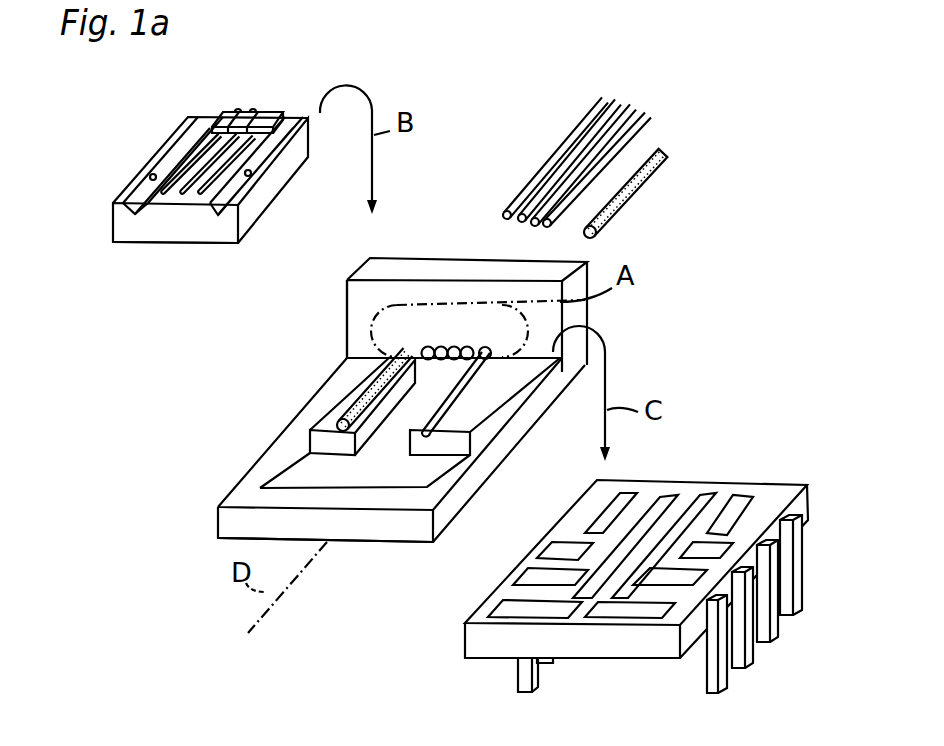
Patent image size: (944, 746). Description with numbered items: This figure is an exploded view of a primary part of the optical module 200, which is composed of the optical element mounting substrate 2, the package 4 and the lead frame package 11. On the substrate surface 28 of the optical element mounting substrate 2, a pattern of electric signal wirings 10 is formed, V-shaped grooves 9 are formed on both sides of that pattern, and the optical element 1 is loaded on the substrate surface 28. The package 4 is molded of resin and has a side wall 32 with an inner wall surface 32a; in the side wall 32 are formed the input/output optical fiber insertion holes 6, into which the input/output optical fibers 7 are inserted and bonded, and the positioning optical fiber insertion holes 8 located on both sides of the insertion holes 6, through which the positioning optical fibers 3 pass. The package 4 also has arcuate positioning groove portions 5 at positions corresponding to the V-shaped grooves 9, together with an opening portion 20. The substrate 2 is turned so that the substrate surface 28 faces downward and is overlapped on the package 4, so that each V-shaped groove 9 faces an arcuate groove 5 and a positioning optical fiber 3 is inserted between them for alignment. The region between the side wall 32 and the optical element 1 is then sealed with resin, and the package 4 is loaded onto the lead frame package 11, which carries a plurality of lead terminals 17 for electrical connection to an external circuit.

The optical element 1 is at (243, 106).
The optical element mounting substrate 2 is at (127, 238).
The positioning optical fiber 3 is at (628, 208).
The package 4 is at (270, 465).
The positioning groove portion 5 is at (357, 400).
The input/output optical fiber insertion hole 6 is at (432, 347).
The input/output optical fiber 7 is at (547, 163).
The positioning optical fiber insertion hole 8 is at (410, 350).
The V-shaped groove 9 is at (157, 175).
The electric signal wirings 10 is at (193, 146).
The lead frame package 11 is at (637, 645).
The lead terminals 17 is at (515, 675).
The opening portion 20 is at (387, 457).
The substrate surface 28 is at (185, 203).
The side wall 32 is at (577, 317).
The inner wall surface 32a is at (362, 298).
The optical module 200 is at (736, 308).